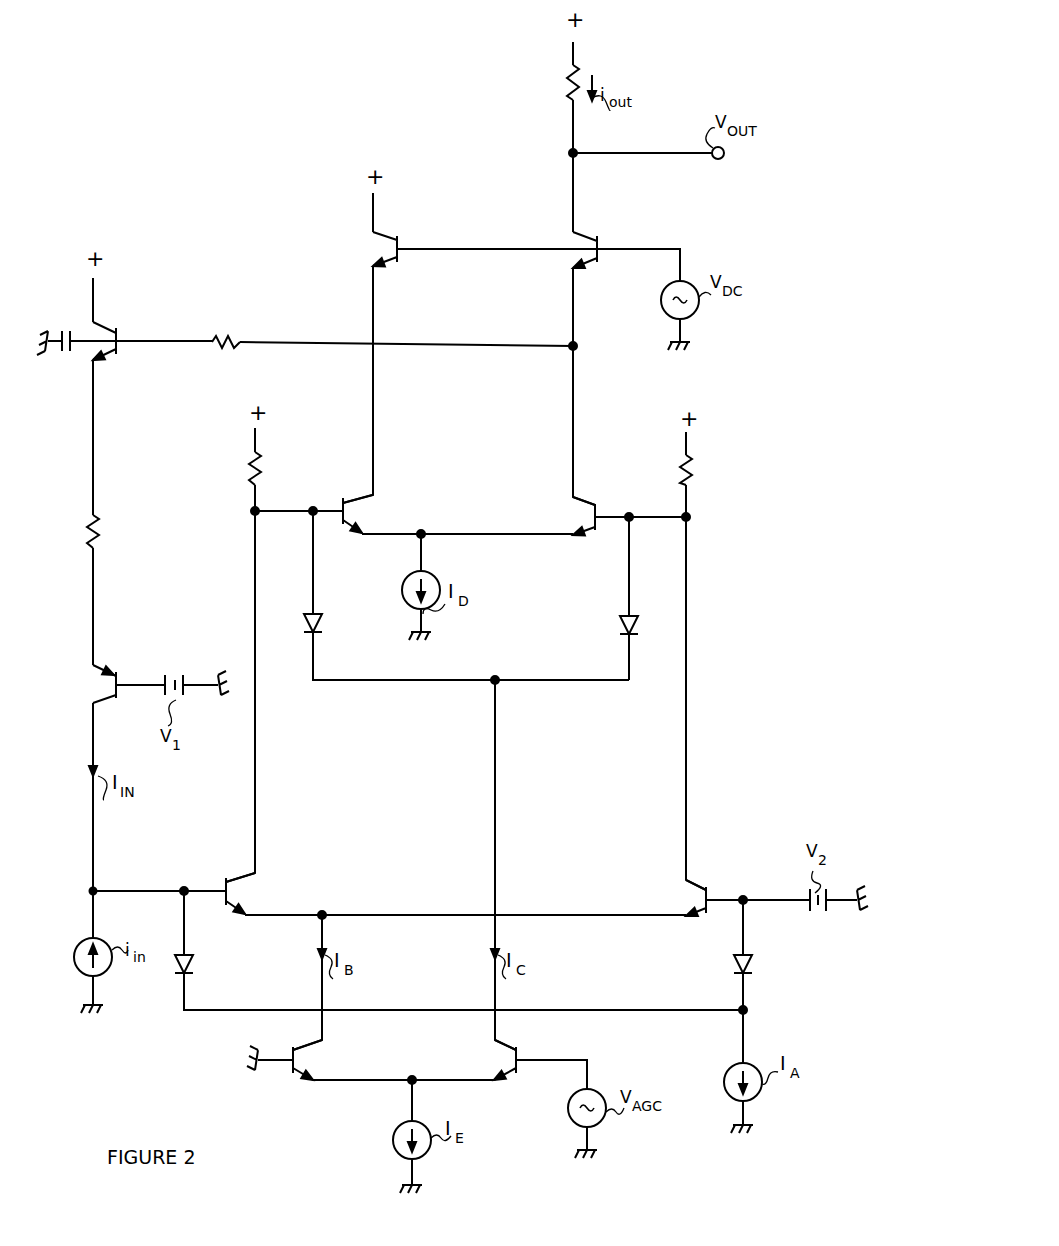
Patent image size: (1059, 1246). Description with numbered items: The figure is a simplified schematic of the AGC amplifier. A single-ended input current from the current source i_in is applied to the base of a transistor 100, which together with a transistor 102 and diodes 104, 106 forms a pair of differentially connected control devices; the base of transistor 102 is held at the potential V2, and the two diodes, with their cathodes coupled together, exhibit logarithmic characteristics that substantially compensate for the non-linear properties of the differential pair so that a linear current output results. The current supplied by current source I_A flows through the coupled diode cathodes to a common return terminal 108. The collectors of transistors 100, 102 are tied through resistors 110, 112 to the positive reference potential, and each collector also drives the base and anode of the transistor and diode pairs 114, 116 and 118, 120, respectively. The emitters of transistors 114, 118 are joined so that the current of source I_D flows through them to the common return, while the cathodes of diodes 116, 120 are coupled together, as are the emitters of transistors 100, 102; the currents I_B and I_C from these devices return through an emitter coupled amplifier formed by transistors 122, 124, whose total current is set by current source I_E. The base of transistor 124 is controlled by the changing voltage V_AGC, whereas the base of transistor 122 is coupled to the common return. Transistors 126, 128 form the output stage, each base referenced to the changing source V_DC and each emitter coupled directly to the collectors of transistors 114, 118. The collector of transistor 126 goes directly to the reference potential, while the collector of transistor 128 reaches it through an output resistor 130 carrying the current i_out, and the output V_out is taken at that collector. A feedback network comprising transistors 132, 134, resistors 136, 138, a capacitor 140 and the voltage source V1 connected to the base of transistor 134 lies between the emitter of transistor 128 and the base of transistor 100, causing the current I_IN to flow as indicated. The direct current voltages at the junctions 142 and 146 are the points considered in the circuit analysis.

The transistor 100 is at (250, 895).
The transistor 102 is at (672, 906).
The diode 104 is at (188, 968).
The diode 106 is at (730, 976).
The common return terminal 108 is at (746, 1126).
The resistor 110 is at (249, 472).
The resistor 112 is at (688, 472).
The transistor 114 is at (364, 528).
The diode 116 is at (314, 624).
The transistor 118 is at (579, 542).
The diode 120 is at (621, 626).
The transistor 122 is at (306, 1068).
The transistor 124 is at (488, 1056).
The transistor 126 is at (368, 246).
The transistor 128 is at (580, 240).
The output resistor 130 is at (567, 78).
The transistor 132 is at (102, 320).
The transistor 134 is at (86, 682).
The resistor 136 is at (216, 341).
The resistor 138 is at (98, 523).
The capacitor 140 is at (73, 361).
The junction 142 is at (306, 500).
The junction 146 is at (618, 499).